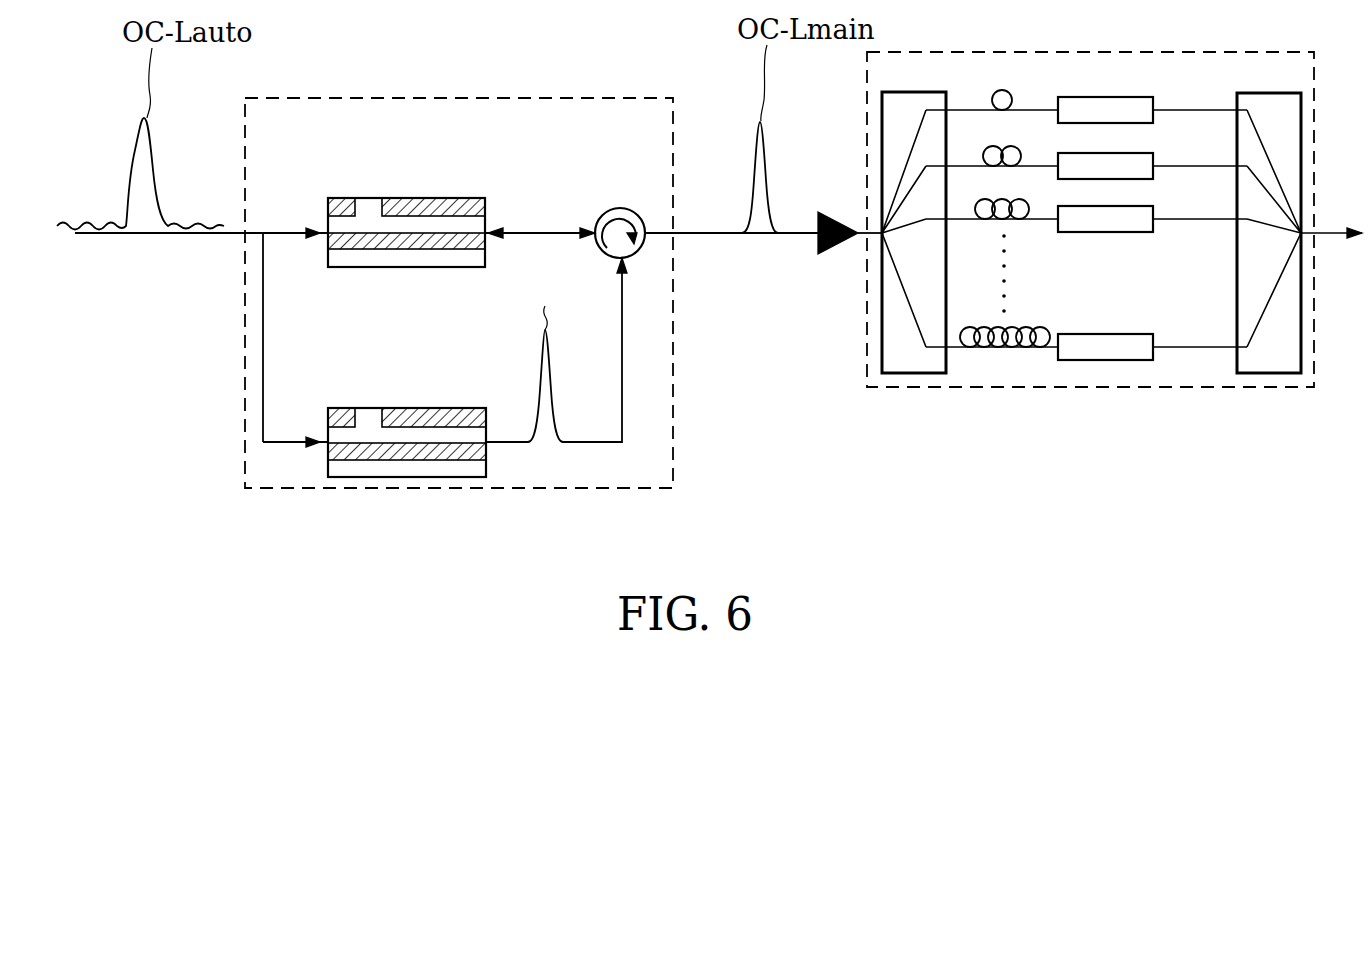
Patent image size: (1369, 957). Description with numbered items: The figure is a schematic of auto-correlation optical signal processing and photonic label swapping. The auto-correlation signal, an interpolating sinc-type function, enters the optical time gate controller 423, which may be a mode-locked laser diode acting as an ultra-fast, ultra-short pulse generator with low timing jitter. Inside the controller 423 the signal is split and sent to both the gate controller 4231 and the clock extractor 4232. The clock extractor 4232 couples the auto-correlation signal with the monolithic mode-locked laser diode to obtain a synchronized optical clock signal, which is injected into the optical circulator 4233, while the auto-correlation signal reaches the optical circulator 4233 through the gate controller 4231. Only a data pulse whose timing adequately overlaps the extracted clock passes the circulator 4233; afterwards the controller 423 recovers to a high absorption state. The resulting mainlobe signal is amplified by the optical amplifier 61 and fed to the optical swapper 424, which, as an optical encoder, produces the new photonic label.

The optical time gate controller 423 is at (312, 139).
The gate controller 4231 is at (402, 198).
The clock extractor 4232 is at (402, 408).
The optical circulator 4233 is at (623, 207).
The optical amplifier 61 is at (838, 210).
The optical swapper 424 is at (1218, 84).